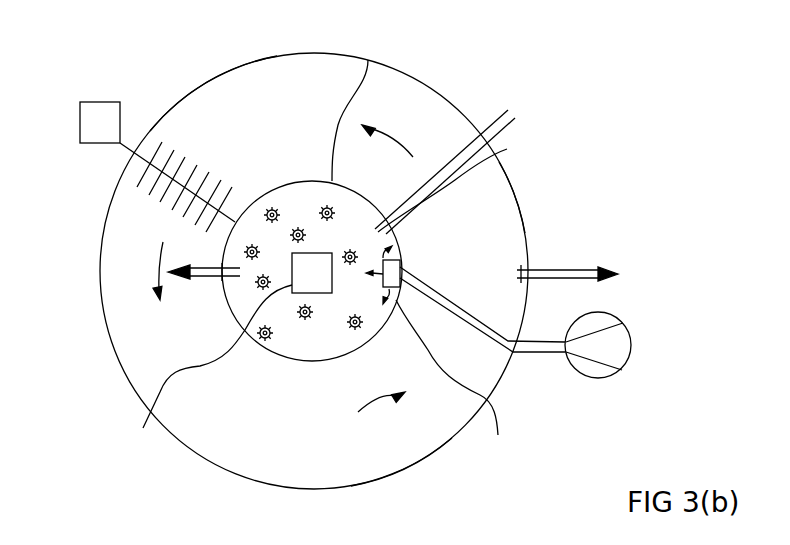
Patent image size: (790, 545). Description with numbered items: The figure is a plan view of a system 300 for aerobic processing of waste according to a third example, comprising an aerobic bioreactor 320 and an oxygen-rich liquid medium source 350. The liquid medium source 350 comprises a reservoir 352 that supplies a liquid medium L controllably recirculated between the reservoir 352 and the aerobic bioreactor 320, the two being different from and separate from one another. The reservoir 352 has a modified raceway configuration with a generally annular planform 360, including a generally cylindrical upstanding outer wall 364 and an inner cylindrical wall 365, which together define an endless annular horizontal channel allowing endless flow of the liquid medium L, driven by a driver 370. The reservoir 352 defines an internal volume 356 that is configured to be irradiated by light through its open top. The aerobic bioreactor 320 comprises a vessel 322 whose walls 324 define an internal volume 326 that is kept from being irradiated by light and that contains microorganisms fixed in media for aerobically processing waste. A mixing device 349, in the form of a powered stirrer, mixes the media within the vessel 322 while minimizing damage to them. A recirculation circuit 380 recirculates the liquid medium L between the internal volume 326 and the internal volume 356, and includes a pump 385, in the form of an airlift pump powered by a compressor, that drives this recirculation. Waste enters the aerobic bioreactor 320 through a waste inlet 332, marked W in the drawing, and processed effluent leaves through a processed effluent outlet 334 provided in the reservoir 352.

The system 300 is at (573, 85).
The aerobic bioreactor 320 is at (410, 239).
The vessel 322 is at (403, 245).
The walls 324 is at (480, 361).
The internal volume 326 is at (312, 271).
The waste inlet 332 is at (507, 149).
The processed effluent outlet 334 is at (580, 263).
The mixing device 349 is at (196, 369).
The oxygen-rich liquid medium source 350 is at (444, 78).
The reservoir 352 is at (513, 191).
The internal volume 356 is at (267, 150).
The annular planform 360 is at (220, 58).
The outer wall 364 is at (415, 468).
The cylindrical wall 365 is at (368, 60).
The driver 370 is at (136, 125).
The recirculation circuit 380 is at (184, 290).
The pump 385 is at (613, 377).
The water W is at (521, 107).
The liquid medium L is at (247, 419).